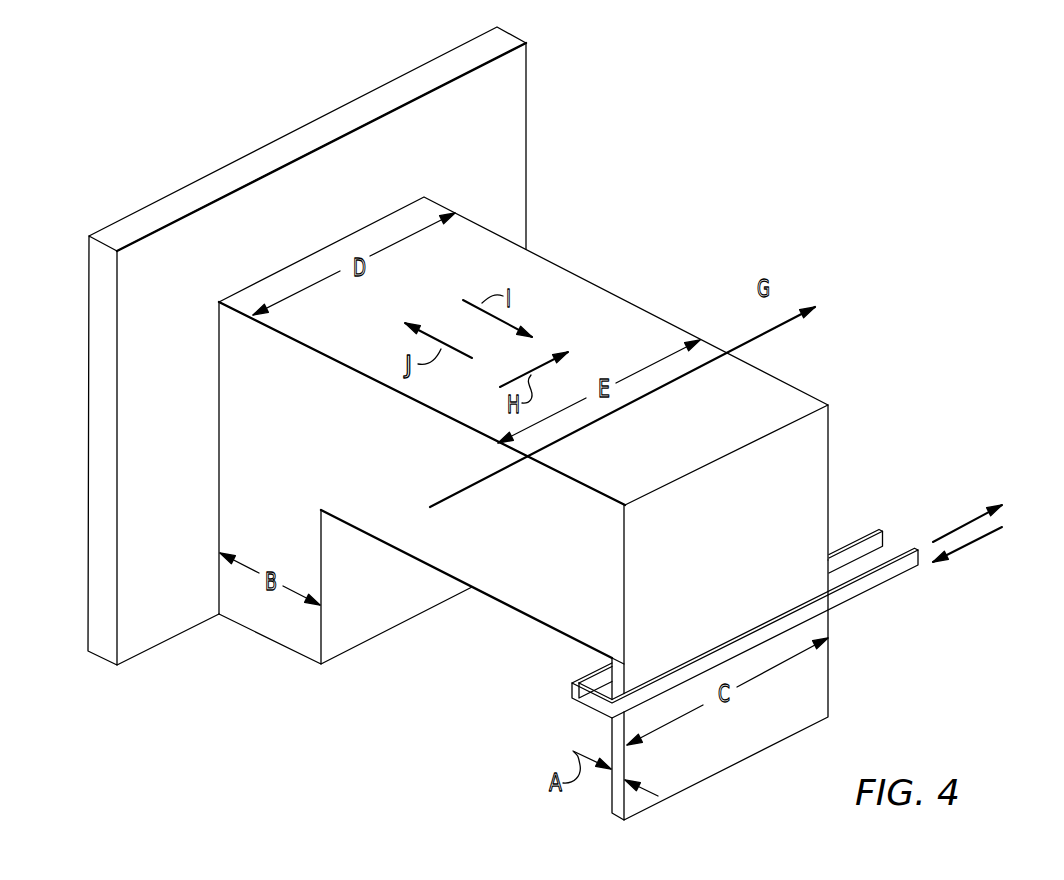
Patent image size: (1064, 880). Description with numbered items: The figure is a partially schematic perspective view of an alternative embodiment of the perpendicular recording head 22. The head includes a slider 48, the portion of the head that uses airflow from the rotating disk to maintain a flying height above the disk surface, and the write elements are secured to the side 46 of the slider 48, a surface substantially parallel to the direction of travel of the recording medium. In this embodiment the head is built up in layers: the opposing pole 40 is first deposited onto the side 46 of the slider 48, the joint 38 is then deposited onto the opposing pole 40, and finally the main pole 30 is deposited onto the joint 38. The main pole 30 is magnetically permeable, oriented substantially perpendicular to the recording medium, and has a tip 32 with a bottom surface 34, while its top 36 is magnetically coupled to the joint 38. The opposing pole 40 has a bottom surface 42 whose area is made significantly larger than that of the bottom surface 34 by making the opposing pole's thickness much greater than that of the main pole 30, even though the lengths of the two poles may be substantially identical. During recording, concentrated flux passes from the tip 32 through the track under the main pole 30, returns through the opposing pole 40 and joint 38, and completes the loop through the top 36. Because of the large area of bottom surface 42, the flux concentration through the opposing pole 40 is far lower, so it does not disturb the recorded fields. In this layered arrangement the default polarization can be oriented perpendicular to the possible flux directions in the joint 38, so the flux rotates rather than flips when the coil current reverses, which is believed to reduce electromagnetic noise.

The perpendicular recording head 22 is at (568, 478).
The main pole 30 is at (745, 675).
The tip 32 is at (787, 728).
The bottom surface 34 is at (706, 768).
The top 36 is at (692, 560).
The joint 38 is at (539, 547).
The opposing pole 40 is at (281, 512).
The bottom surface 42 is at (298, 652).
The side 46 is at (496, 139).
The slider 48 is at (359, 346).